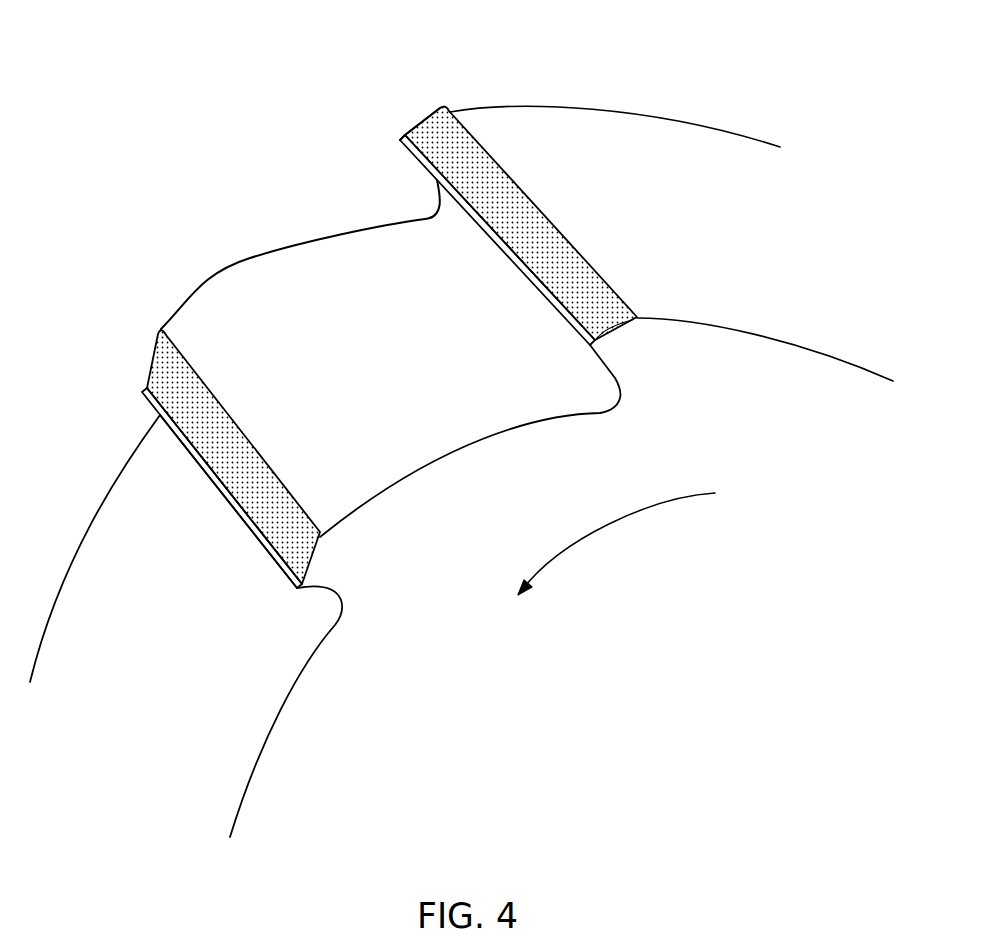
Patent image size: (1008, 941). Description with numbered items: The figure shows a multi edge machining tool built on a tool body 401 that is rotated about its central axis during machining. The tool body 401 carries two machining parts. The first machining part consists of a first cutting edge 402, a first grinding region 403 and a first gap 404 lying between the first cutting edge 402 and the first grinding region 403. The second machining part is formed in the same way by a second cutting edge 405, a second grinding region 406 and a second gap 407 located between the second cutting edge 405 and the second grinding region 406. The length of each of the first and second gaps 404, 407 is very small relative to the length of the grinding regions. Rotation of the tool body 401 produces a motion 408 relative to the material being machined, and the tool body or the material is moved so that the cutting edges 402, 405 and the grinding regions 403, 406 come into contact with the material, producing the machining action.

The tool body 401 is at (682, 140).
The first cutting edge 402 is at (400, 140).
The first grinding region 403 is at (438, 130).
The first gap 404 is at (420, 167).
The second cutting edge 405 is at (150, 405).
The second grinding region 406 is at (157, 370).
The second gap 407 is at (203, 472).
The motion 408 is at (625, 503).